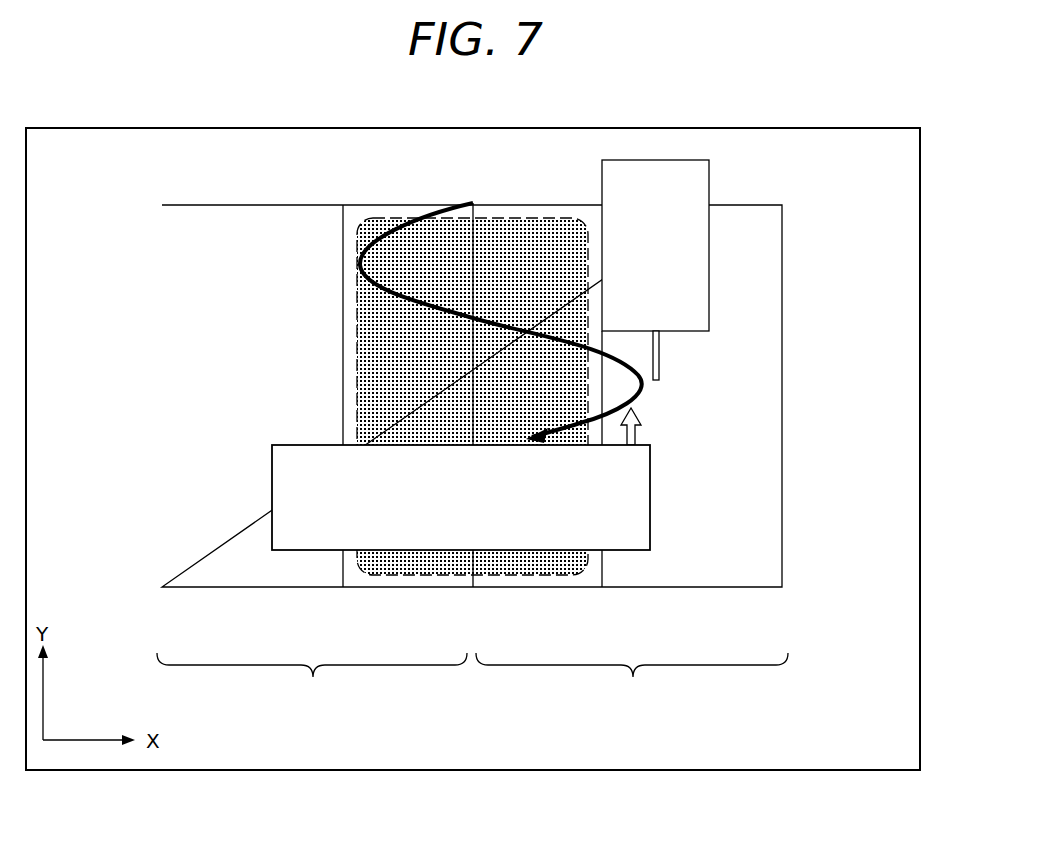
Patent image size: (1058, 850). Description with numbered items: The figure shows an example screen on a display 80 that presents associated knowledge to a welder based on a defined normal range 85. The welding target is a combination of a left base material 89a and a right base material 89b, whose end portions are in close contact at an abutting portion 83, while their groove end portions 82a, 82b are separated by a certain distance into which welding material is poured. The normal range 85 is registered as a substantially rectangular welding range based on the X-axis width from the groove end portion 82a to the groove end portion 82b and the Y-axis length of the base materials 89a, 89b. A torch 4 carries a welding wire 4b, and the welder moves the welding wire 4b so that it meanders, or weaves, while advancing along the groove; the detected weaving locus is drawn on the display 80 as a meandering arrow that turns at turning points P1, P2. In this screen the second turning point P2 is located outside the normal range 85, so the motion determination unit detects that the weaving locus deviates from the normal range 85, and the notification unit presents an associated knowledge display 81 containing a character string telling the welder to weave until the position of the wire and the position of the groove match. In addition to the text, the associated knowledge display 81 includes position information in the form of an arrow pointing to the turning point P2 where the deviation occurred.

The display 80 is at (47, 128).
The associated knowledge display 81 is at (287, 445).
The groove end portion 82a is at (343, 570).
The groove end portion 82b is at (602, 570).
The abutting portion 83 is at (473, 587).
The normal range 85 is at (402, 218).
The torch 4 is at (709, 176).
The welding wire 4b is at (659, 352).
The turning point P1 is at (360, 263).
The second turning point P2 is at (641, 389).
The left base material 89a is at (312, 682).
The right base material 89b is at (632, 682).